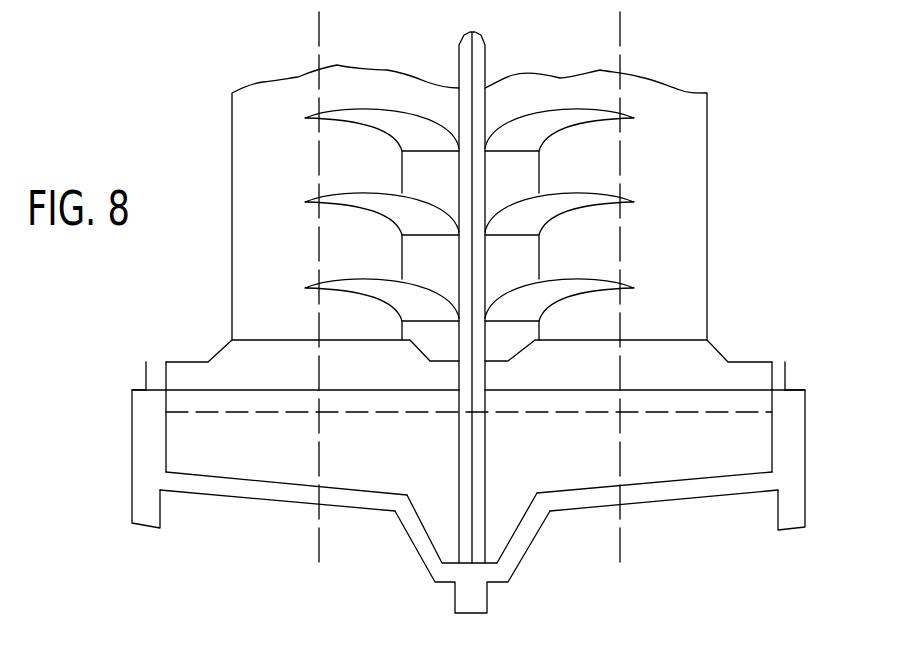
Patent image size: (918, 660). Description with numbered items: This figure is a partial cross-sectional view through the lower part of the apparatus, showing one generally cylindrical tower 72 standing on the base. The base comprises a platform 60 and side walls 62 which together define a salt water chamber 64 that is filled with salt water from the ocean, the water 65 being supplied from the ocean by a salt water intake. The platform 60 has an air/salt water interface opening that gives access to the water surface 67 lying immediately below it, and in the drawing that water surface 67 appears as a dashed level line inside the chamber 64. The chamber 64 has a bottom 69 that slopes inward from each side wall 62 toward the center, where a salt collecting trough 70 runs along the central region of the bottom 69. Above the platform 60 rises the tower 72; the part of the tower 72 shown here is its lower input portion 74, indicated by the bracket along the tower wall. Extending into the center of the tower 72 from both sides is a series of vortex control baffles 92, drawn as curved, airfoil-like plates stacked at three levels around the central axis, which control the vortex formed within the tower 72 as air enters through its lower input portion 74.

The platform 60 is at (153, 377).
The side walls 62 is at (145, 440).
The salt water chamber 64 is at (443, 477).
The water 65 is at (567, 476).
The water surface 67 is at (221, 414).
The bottom 69 is at (233, 500).
The salt collecting trough 70 is at (423, 543).
The tower 72 is at (231, 112).
The lower input portion 74 is at (770, 148).
The vortex control baffles 92 is at (336, 123).